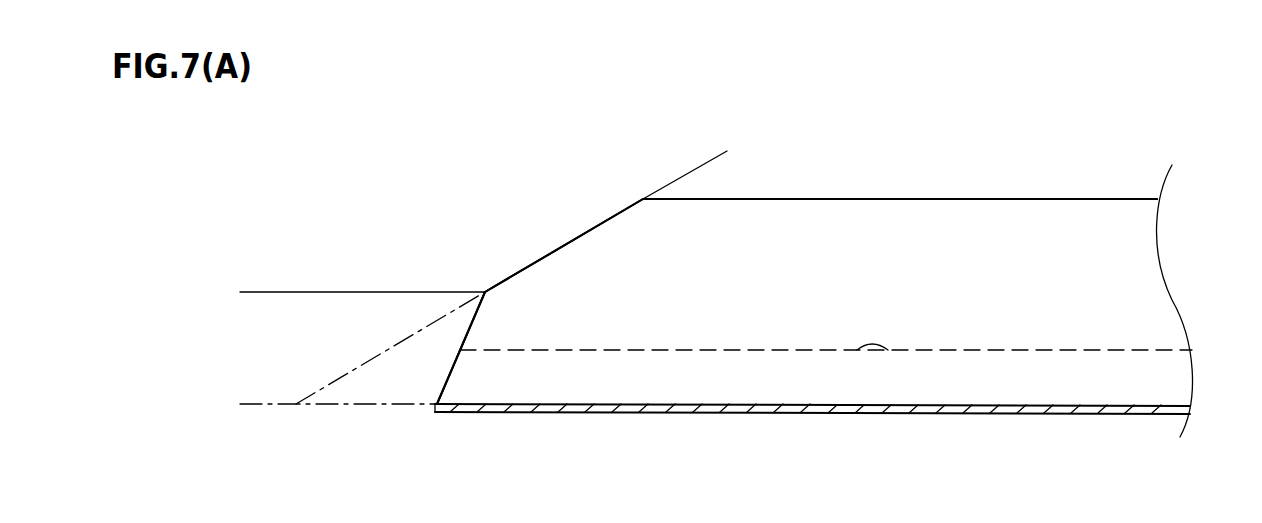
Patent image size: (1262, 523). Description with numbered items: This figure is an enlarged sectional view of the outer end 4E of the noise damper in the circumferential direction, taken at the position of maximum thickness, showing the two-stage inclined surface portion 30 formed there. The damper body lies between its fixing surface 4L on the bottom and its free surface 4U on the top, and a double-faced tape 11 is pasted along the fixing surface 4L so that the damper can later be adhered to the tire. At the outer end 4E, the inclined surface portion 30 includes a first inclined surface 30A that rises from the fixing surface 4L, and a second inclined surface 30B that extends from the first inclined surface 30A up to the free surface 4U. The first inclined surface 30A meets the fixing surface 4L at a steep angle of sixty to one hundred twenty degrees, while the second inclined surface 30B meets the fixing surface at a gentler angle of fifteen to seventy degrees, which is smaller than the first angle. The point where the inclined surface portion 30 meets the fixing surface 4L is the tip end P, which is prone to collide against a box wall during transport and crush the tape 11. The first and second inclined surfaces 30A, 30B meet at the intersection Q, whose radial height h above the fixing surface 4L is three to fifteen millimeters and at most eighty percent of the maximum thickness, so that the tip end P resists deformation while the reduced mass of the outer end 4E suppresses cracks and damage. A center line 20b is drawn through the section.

The inclined surface portion 30 is at (495, 178).
The outer end 4E is at (470, 225).
The second inclined surface 30B is at (573, 240).
The first inclined surface 30A is at (447, 380).
The intersection Q is at (483, 290).
The tip end P is at (432, 416).
The height h is at (246, 293).
The free surface 4U is at (1057, 199).
The fixing surface 4L is at (1002, 408).
The double-faced tape 11 is at (1078, 415).
The center line of layer 20 20b is at (892, 353).